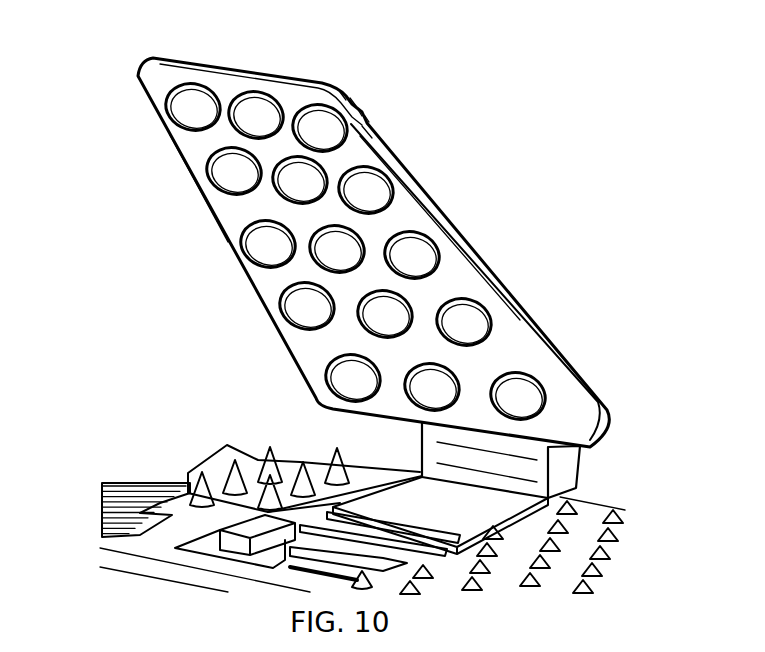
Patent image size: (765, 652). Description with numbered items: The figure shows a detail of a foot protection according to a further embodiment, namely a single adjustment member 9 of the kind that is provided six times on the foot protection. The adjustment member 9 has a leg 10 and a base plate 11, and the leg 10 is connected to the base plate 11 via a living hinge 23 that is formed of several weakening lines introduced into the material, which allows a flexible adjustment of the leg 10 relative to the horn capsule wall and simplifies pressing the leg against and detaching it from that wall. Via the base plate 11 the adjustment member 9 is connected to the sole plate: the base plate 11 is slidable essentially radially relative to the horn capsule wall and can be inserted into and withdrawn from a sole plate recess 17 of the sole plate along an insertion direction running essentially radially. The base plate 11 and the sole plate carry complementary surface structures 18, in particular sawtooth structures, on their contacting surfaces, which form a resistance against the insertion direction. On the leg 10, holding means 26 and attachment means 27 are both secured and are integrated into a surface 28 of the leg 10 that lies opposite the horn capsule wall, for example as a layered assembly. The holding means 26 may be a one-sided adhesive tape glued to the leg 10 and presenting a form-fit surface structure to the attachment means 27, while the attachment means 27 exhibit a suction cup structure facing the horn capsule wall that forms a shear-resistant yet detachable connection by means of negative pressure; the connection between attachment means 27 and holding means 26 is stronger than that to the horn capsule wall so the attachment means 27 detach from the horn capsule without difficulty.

The adjustment member 9 is at (568, 50).
The leg 10 is at (453, 223).
The base plate 11 is at (438, 489).
The sole plate recess 17 is at (152, 468).
The complementary surface structures 18 is at (118, 493).
The living hinge 23 is at (562, 462).
The holding means 26 is at (378, 130).
The attachment means 27 is at (212, 180).
The surface 28 is at (221, 226).